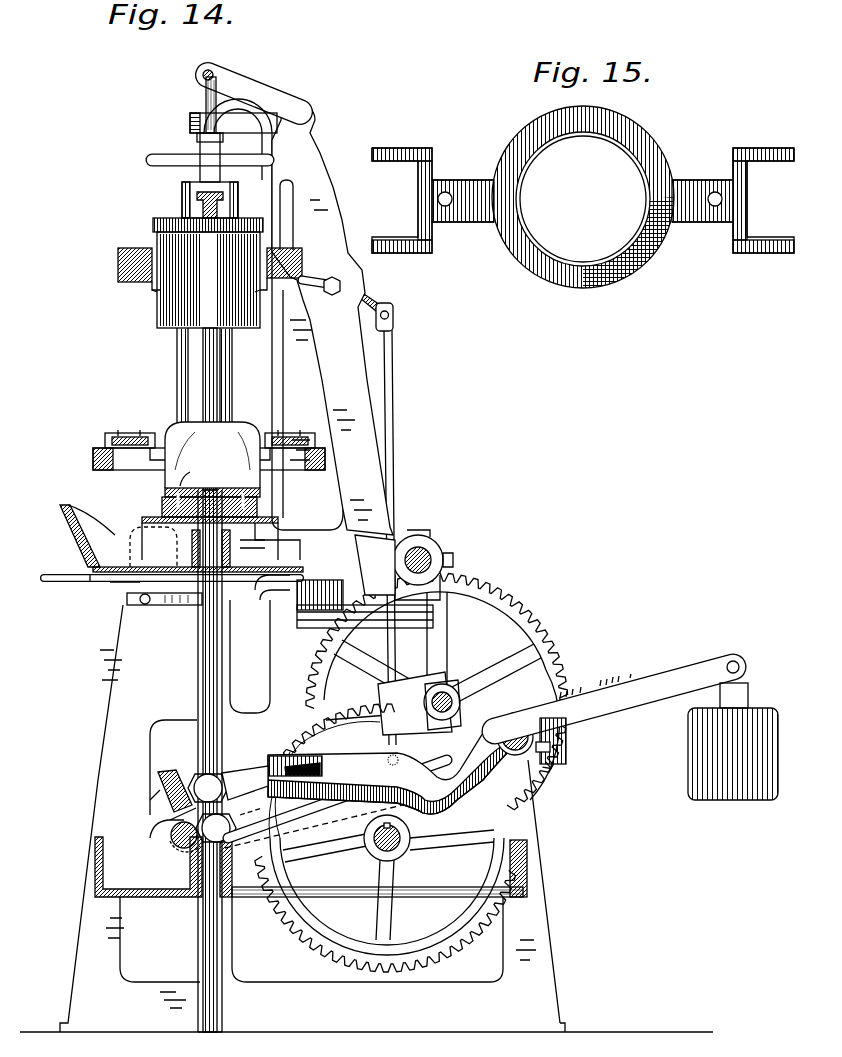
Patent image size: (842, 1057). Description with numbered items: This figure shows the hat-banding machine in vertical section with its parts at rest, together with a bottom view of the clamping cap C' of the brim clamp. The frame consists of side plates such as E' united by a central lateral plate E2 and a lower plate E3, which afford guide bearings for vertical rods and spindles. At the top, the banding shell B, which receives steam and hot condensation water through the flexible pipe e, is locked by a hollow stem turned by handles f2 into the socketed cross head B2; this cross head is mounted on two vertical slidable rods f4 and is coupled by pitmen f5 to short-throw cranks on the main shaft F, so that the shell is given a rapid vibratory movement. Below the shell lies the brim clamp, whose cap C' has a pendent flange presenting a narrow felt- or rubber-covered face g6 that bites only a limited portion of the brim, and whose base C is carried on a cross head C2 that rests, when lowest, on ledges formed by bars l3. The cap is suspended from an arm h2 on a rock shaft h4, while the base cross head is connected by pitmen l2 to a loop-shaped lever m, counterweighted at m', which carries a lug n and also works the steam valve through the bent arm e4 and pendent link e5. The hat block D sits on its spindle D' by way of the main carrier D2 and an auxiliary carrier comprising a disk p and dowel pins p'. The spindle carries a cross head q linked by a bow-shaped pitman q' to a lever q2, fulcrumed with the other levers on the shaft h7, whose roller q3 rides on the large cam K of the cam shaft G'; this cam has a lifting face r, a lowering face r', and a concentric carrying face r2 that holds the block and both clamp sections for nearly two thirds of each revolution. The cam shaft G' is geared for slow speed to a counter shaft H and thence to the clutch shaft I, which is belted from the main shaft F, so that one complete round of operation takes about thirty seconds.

In FIG. 14, the arm h2 is at (232, 74).
In FIG. 14, the flexible pipe e is at (248, 110).
In FIG. 14, the rock shaft h4 is at (306, 110).
In FIG. 14, the vertical slidable rods f4 is at (205, 92).
In FIG. 14, the handles f2 is at (170, 158).
In FIG. 14, the cross head B2 is at (200, 205).
In FIG. 14, the clamping cap C' is at (196, 261).
In FIG. 15, the clamping cap C' is at (583, 197).
In FIG. 14, the narrow annular clamping face g6 is at (150, 290).
In FIG. 15, the narrow annular clamping face g6 is at (572, 136).
In FIG. 14, the banding shell B is at (166, 318).
In FIG. 14, the pitmen f5 is at (180, 396).
In FIG. 14, the clamp base C is at (194, 430).
In FIG. 14, the cross head C2 is at (94, 462).
In FIG. 14, the hat block D is at (212, 455).
In FIG. 14, the dowel pins p' is at (241, 486).
In FIG. 14, the disk p is at (185, 484).
In FIG. 14, the main carrier D2 is at (163, 508).
In FIG. 14, the lateral plate E2 is at (92, 546).
In FIG. 14, the bars l3 is at (128, 600).
In FIG. 14, the side plate E' is at (312, 816).
In FIG. 14, the pitmen l2 is at (205, 700).
In FIG. 14, the cross head q is at (178, 777).
In FIG. 14, the bow shaped pitman q' is at (127, 790).
In FIG. 14, the main shaft F is at (170, 834).
In FIG. 14, the lateral plate E3 is at (309, 867).
In FIG. 14, the block spindle D' is at (186, 985).
In FIG. 14, the cam K is at (300, 940).
In FIG. 14, the lifting face r is at (386, 838).
In FIG. 14, the cam shaft G' is at (399, 849).
In FIG. 14, the lever q2 is at (262, 835).
In FIG. 14, the roller q3 is at (340, 815).
In FIG. 14, the loop shaped lever m is at (245, 782).
In FIG. 14, the lug n is at (290, 762).
In FIG. 14, the counter shaft H is at (448, 690).
In FIG. 14, the clutch shaft I is at (432, 546).
In FIG. 14, the bent arm e4 is at (390, 304).
In FIG. 14, the pendent link e5 is at (394, 385).
In FIG. 14, the fulcrum shaft h7 is at (542, 745).
In FIG. 14, the lowering face r' is at (419, 767).
In FIG. 14, the carrying face r2 is at (512, 876).
In FIG. 14, the counterweight m' is at (733, 767).